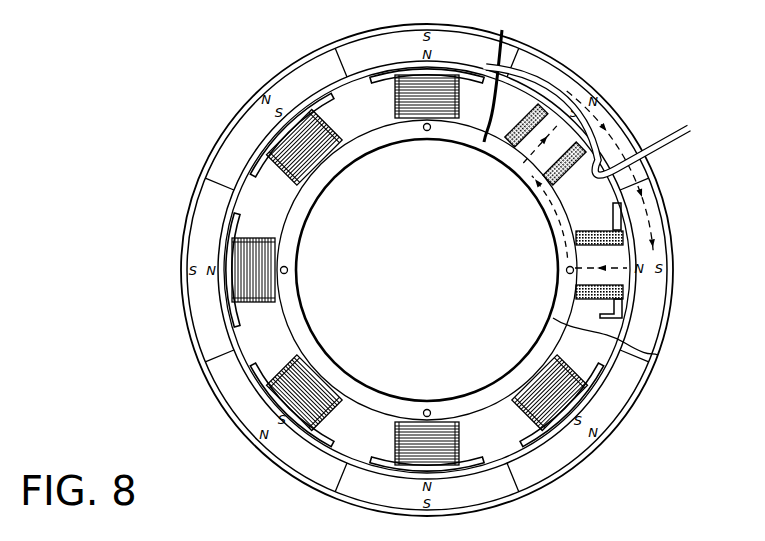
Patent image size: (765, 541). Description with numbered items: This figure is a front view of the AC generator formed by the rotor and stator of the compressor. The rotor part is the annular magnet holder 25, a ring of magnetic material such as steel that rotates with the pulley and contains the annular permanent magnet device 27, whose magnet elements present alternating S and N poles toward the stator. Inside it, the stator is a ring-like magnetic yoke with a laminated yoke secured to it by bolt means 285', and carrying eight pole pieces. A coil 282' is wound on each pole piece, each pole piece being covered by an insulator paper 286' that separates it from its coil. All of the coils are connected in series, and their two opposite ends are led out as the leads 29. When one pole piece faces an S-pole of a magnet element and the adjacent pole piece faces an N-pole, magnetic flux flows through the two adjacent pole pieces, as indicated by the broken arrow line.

The coil 282' is at (611, 145).
The insulator paper 286' is at (587, 121).
The leads 29 is at (693, 136).
The annular permanent magnet device 27 is at (628, 388).
The annular magnet holder 25 is at (618, 422).
The bolt means 285' is at (207, 299).